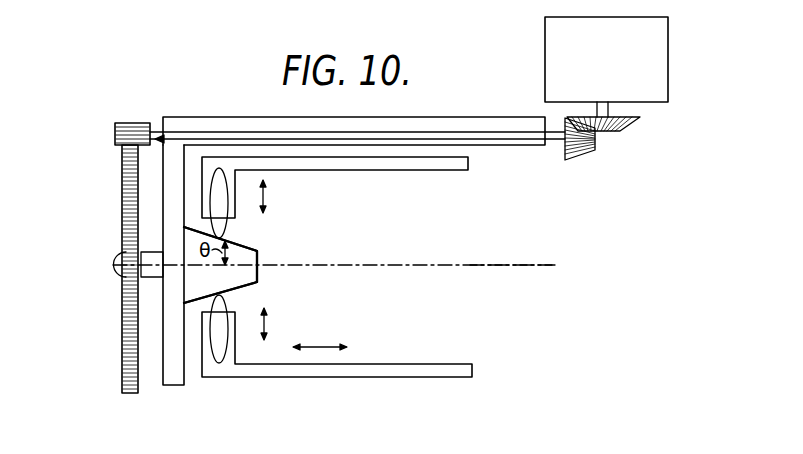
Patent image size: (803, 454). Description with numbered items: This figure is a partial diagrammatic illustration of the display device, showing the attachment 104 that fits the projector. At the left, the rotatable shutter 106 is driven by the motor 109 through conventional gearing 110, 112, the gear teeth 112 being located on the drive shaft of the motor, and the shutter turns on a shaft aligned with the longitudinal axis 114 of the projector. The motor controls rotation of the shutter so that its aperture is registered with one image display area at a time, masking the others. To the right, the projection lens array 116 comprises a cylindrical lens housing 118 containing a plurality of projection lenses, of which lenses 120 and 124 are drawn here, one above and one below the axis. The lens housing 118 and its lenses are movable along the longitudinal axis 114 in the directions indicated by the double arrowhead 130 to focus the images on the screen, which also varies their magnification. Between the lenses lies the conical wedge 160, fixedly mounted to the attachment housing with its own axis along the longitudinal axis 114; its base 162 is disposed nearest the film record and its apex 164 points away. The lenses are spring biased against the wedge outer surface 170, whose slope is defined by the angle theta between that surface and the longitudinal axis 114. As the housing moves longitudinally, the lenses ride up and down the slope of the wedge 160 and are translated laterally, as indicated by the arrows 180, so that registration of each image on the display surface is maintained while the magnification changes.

The attachment 104 is at (173, 386).
The rotatable shutter 106 is at (122, 356).
The motor 109 is at (662, 47).
The gearing 110 is at (133, 123).
The gear teeth 112 is at (122, 173).
The longitudinal axis 114 is at (486, 265).
The projection lens array 116 is at (359, 187).
The lens housing 118 is at (473, 162).
The projection lens 120 is at (220, 238).
The projection lens 124 is at (222, 355).
The double arrowhead 130 is at (323, 347).
The conical wedge 160 is at (262, 250).
The base 162 is at (165, 240).
The apex 164 is at (261, 270).
The wedge outer surface 170 is at (258, 250).
The arrows 180 is at (266, 328).